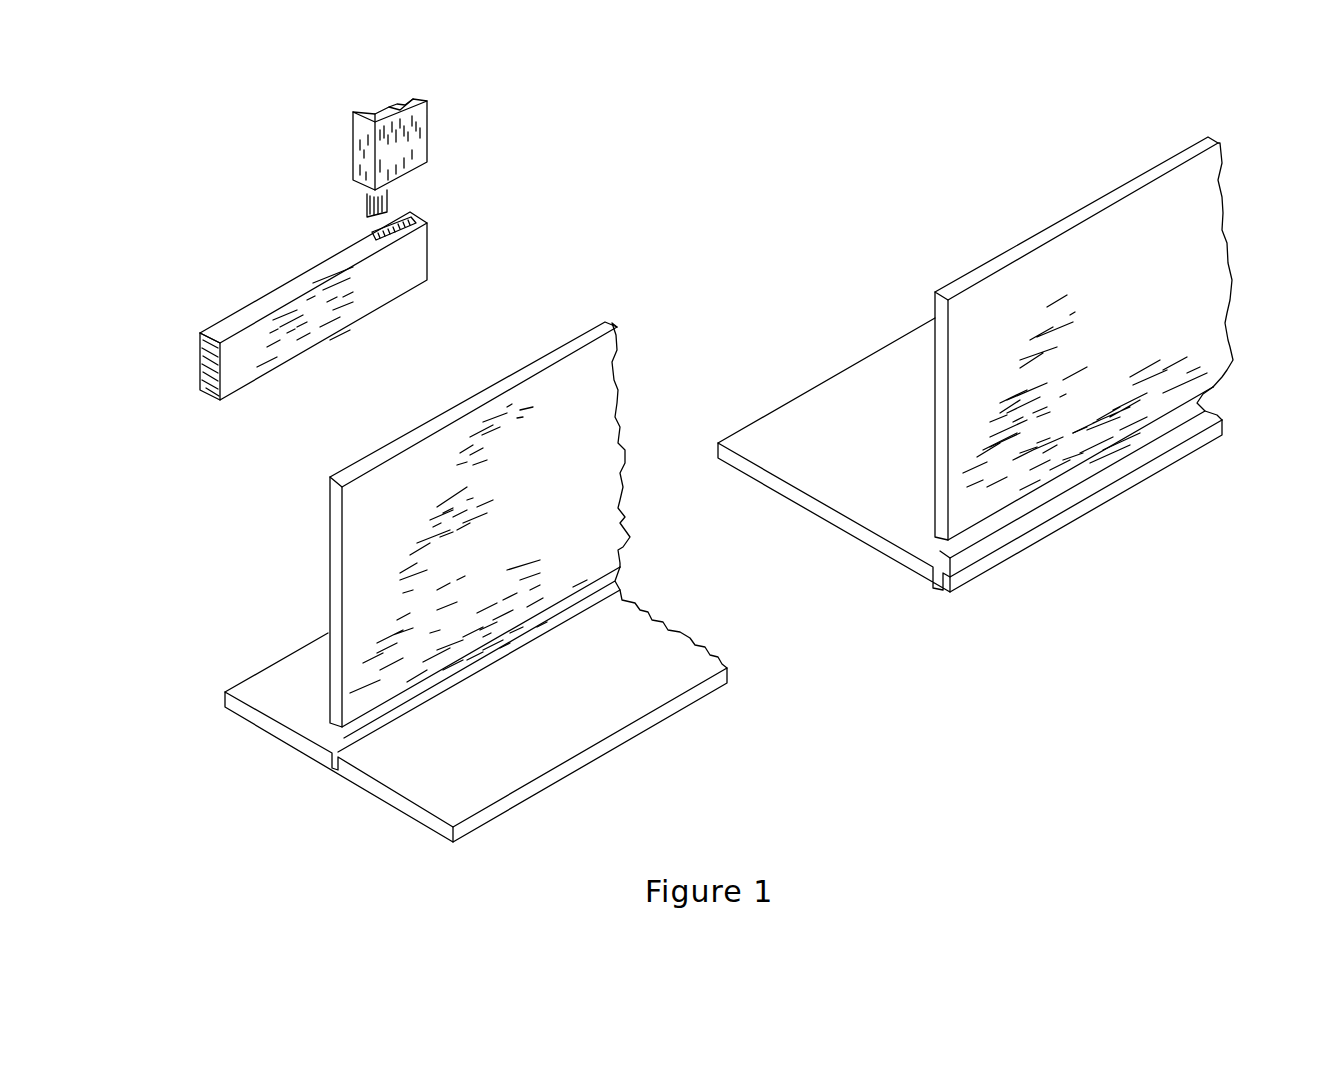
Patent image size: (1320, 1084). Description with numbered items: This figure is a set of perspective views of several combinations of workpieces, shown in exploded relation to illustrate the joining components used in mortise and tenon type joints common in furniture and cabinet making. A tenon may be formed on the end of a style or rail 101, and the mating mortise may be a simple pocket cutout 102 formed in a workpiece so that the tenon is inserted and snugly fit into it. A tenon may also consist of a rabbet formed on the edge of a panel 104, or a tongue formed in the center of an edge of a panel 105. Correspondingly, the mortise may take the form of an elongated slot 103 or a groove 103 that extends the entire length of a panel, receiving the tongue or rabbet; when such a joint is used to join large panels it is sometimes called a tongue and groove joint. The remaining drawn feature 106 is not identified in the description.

The connector 101 is at (363, 200).
The slotted rail 102 is at (417, 231).
The base groove 103 is at (933, 580).
The rail 104 is at (948, 546).
The rail slot 105 is at (330, 723).
The base groove 106 is at (330, 766).